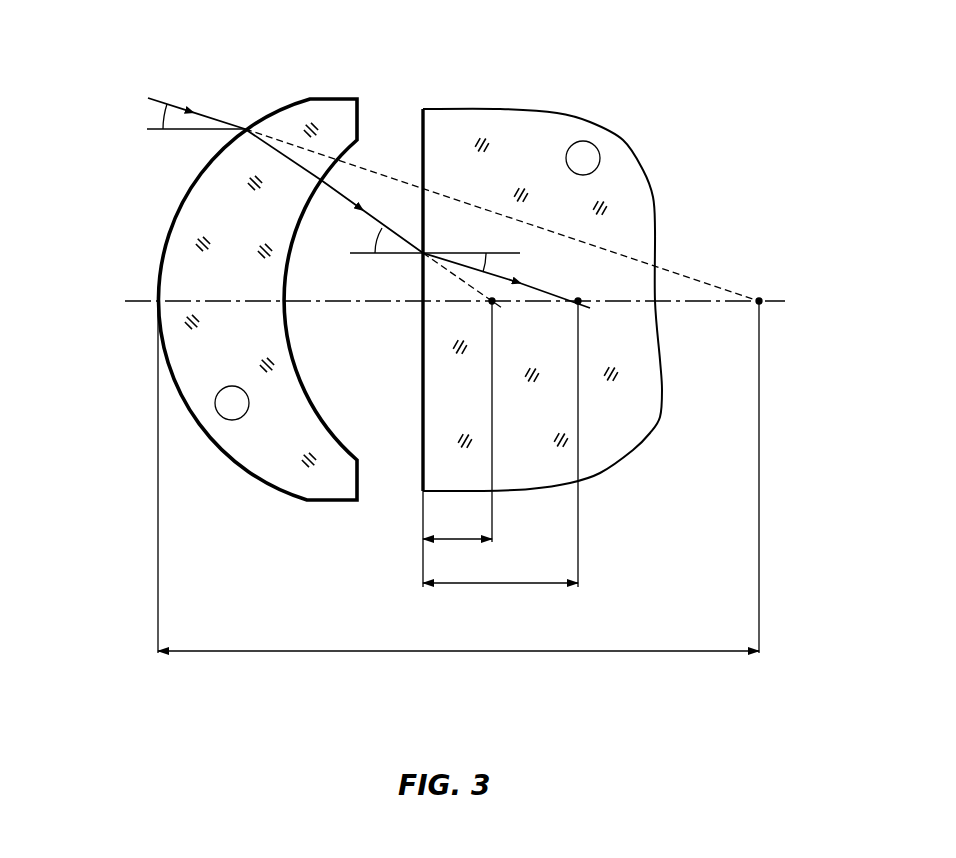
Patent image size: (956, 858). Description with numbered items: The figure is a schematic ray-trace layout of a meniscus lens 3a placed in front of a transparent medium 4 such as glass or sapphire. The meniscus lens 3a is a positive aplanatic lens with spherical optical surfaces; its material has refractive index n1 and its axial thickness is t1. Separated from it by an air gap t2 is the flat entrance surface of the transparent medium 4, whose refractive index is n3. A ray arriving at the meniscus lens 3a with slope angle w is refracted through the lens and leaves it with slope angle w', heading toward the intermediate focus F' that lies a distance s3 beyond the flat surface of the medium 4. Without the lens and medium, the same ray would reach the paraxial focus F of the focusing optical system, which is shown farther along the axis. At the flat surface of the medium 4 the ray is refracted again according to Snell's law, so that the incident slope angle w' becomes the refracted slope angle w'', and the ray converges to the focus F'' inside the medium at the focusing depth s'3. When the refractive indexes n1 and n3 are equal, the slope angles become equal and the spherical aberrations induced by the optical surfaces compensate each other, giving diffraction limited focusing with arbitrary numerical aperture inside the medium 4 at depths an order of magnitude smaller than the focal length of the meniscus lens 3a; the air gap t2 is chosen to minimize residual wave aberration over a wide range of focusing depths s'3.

The meniscus lens 3a is at (257, 270).
The transparent medium 4 is at (549, 269).
The refractive index of meniscus lens n1 is at (232, 403).
The refractive index of transparent medium n3 is at (583, 158).
The paraxial focus of focusing optical system F is at (744, 475).
The intermediate focus after meniscus lens F' is at (507, 420).
The focus inside transparent medium F'' is at (598, 442).
The slope angle of incident ray w is at (193, 114).
The slope angle of incident ray at flat surface w' is at (386, 239).
The slope angle of refracted ray w'' is at (475, 266).
The thickness of meniscus lens t1 is at (220, 287).
The air gap t2 is at (353, 287).
The distance to intermediate focus s3 is at (457, 530).
The focusing depth s'3 is at (500, 573).